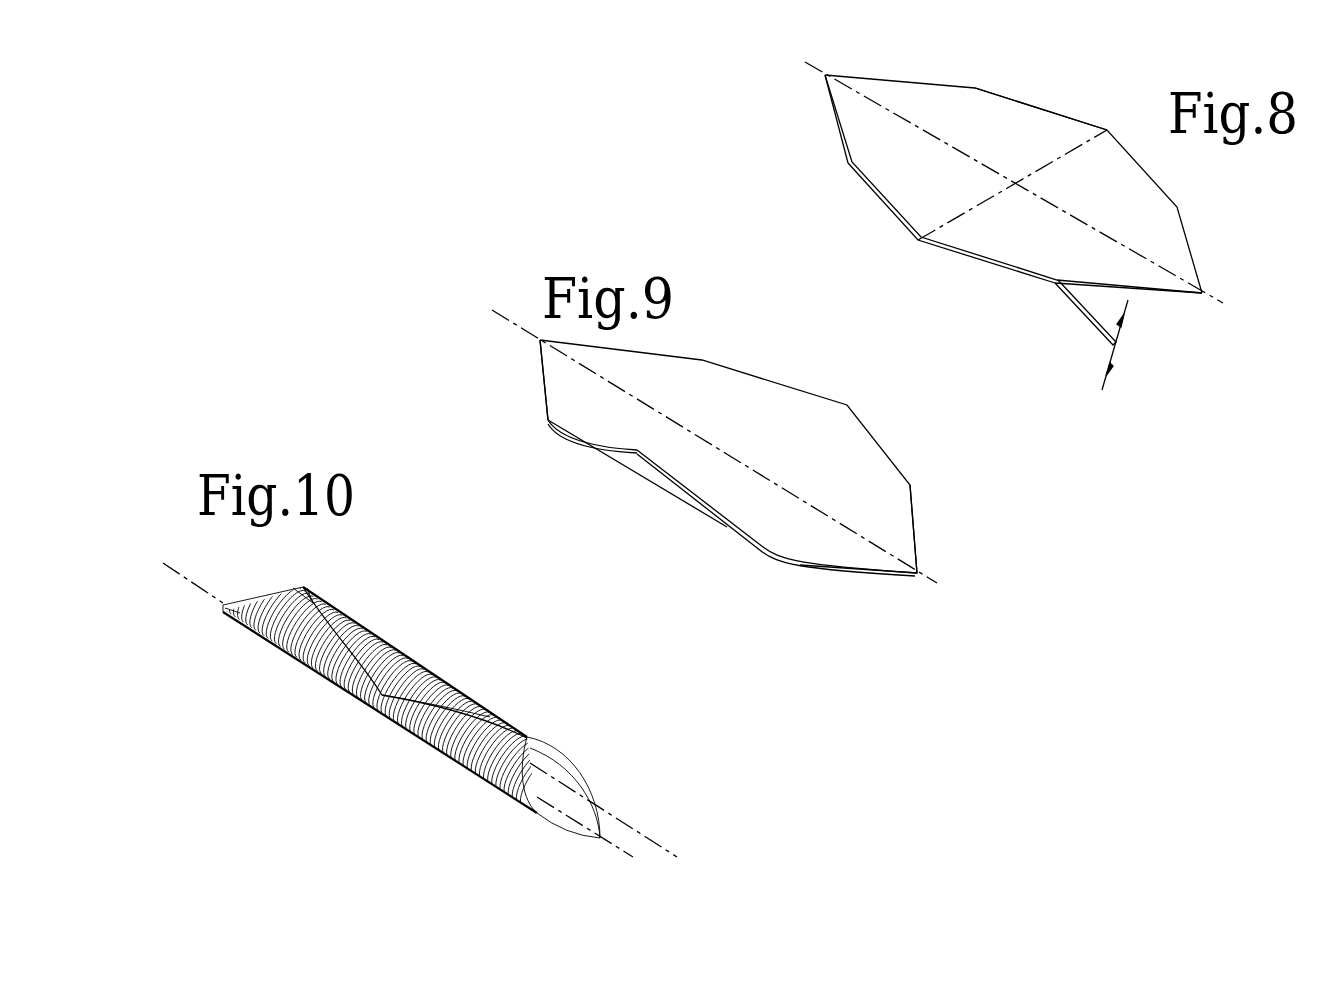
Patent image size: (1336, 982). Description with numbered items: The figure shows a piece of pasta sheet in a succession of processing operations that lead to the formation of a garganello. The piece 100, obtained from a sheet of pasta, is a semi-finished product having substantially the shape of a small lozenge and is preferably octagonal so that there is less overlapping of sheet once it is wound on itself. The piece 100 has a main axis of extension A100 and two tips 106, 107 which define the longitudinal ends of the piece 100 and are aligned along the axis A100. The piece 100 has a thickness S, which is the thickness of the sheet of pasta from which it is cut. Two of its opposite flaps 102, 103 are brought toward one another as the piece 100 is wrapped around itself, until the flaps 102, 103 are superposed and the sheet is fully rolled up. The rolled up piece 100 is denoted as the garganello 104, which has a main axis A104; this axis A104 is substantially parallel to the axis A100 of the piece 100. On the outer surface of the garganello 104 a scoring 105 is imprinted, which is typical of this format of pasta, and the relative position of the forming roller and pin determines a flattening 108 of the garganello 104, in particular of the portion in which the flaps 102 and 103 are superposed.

In FIG. 8, the piece 100 is at (1051, 89).
In FIG. 9, the piece 100 is at (852, 373).
In FIG. 8, the flap 102 is at (1112, 135).
In FIG. 10, the flap 102 is at (392, 677).
In FIG. 8, the flap 103 is at (927, 222).
In FIG. 9, the flap 103 is at (646, 449).
In FIG. 10, the flap 103 is at (432, 668).
In FIG. 10, the garganello 104 is at (422, 770).
In FIG. 10, the scoring 105 is at (287, 655).
In FIG. 8, the tip 106 is at (815, 82).
In FIG. 9, the tip 106 is at (535, 343).
In FIG. 10, the tip 106 is at (220, 607).
In FIG. 8, the tip 107 is at (1212, 286).
In FIG. 9, the tip 107 is at (917, 577).
In FIG. 10, the tip 107 is at (597, 837).
In FIG. 10, the flattening 108 is at (380, 690).
In FIG. 8, the main axis of extension A100 is at (805, 62).
In FIG. 9, the main axis of extension A100 is at (503, 320).
In FIG. 10, the main axis of extension A100 is at (178, 573).
In FIG. 10, the main axis A104 is at (623, 818).
In FIG. 8, the thickness S is at (1102, 388).